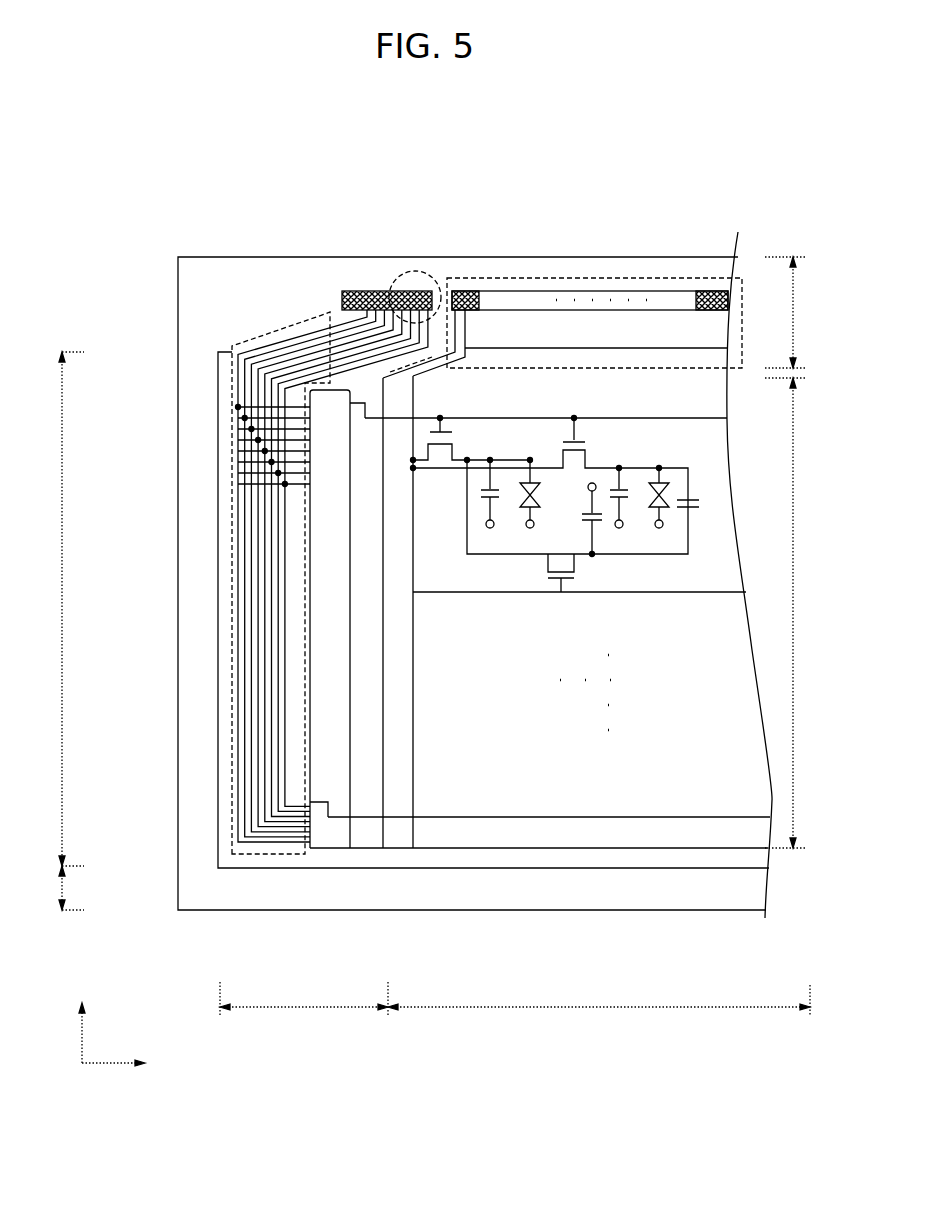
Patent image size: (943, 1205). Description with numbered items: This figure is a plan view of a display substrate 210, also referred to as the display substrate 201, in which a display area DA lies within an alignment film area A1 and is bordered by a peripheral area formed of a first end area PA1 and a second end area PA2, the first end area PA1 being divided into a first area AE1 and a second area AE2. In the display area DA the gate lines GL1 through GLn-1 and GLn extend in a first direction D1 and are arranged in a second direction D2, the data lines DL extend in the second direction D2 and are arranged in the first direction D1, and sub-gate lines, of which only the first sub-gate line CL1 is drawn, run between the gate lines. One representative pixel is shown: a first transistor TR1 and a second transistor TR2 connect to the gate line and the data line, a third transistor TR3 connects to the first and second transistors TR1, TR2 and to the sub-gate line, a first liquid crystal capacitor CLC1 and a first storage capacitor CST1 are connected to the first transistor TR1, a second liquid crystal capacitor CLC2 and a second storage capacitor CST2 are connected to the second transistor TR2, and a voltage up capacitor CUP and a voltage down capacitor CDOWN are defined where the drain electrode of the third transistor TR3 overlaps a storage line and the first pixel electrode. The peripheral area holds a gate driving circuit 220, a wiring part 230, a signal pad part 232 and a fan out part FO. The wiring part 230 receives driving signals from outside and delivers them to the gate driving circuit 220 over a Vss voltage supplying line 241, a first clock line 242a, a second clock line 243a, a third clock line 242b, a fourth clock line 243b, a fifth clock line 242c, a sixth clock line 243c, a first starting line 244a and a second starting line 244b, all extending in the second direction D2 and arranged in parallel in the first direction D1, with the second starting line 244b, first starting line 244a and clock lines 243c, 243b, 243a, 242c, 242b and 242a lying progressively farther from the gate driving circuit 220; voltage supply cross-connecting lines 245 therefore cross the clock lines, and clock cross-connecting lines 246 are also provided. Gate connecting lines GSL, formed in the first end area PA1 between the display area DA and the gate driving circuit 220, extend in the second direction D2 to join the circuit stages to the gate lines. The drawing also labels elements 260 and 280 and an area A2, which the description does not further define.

The display substrate 201 is at (503, 155).
The display substrate 210 is at (222, 288).
The gate driving circuit 220 is at (333, 849).
The wiring part 230 is at (297, 310).
The signal pad part 232 is at (417, 272).
The Vss voltage supplying line 241 is at (238, 600).
The first clock line 242a is at (245, 632).
The third clock line 242b is at (252, 654).
The fifth clock line 242c is at (258, 677).
The second clock line 243a is at (265, 732).
The fourth clock line 243b is at (272, 756).
The sixth clock line 243c is at (285, 779).
The first starting line 244a is at (240, 392).
The second starting line 244b is at (245, 418).
The voltage supply cross-connecting lines 245 is at (238, 470).
The clock cross-connecting lines 246 is at (238, 428).
The data pad portion 260 is at (462, 288).
The data connection line 280 is at (468, 348).
The fan out part FO is at (665, 280).
The gate connecting lines GSL is at (383, 405).
The first gate line GL1 is at (548, 418).
The n-th gate line GLn is at (648, 848).
The (n-1)-th gate line GLn-1 is at (717, 817).
The data lines DL is at (388, 732).
The first sub-gate line CL1 is at (709, 592).
The first transistor TR1 is at (550, 485).
The second transistor TR2 is at (471, 438).
The third transistor TR3 is at (581, 573).
The first storage capacitor CST1 is at (628, 490).
The second storage capacitor CST2 is at (470, 497).
The first liquid crystal capacitor CLC1 is at (670, 492).
The second liquid crystal capacitor CLC2 is at (525, 505).
The voltage up capacitor CUP is at (703, 516).
The voltage down capacitor CDOWN is at (634, 520).
The alignment film area A1 is at (532, 870).
The second area A2 is at (587, 912).
The first end area PA1 is at (304, 1007).
The second end area PA2 is at (799, 312).
The display area DA is at (607, 705).
The first area AE1 is at (53, 609).
The second area AE2 is at (55, 888).
The first direction D1 is at (130, 1066).
The second direction D2 is at (82, 1022).